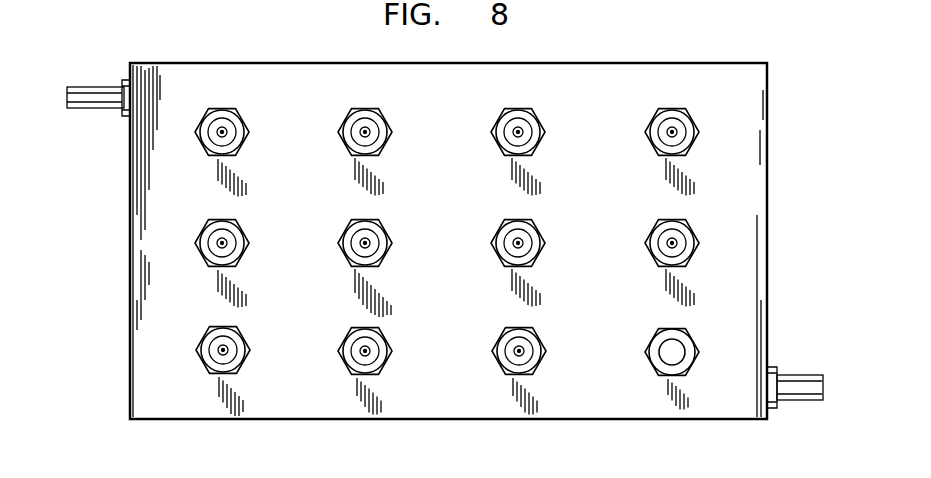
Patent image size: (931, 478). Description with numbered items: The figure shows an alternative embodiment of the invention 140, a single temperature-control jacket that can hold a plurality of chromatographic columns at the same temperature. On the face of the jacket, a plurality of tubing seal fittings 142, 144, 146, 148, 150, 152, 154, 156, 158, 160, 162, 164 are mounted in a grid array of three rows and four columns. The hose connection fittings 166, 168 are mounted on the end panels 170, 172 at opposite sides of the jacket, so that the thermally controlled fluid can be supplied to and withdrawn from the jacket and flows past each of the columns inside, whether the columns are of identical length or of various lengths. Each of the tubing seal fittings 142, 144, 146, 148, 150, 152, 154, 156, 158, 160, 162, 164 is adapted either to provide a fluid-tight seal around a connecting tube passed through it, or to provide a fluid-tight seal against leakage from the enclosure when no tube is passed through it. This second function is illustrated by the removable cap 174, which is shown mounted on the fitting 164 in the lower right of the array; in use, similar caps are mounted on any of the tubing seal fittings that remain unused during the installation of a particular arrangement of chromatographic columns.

The alternative embodiment of the invention 140 is at (102, 352).
The tubing seal fitting 142 is at (249, 131).
The tubing seal fitting 144 is at (393, 131).
The tubing seal fitting 146 is at (546, 131).
The tubing seal fitting 148 is at (700, 131).
The tubing seal fitting 150 is at (249, 243).
The tubing seal fitting 152 is at (393, 243).
The tubing seal fitting 154 is at (546, 243).
The tubing seal fitting 156 is at (700, 243).
The tubing seal fitting 158 is at (243, 368).
The tubing seal fitting 160 is at (385, 367).
The tubing seal fitting 162 is at (539, 368).
The tubing seal fitting 164 is at (692, 370).
The hose connection fitting 166 is at (97, 110).
The hose connection fitting 168 is at (793, 397).
The end panel 170 is at (130, 281).
The end panel 172 is at (768, 281).
The cap 174 is at (668, 373).